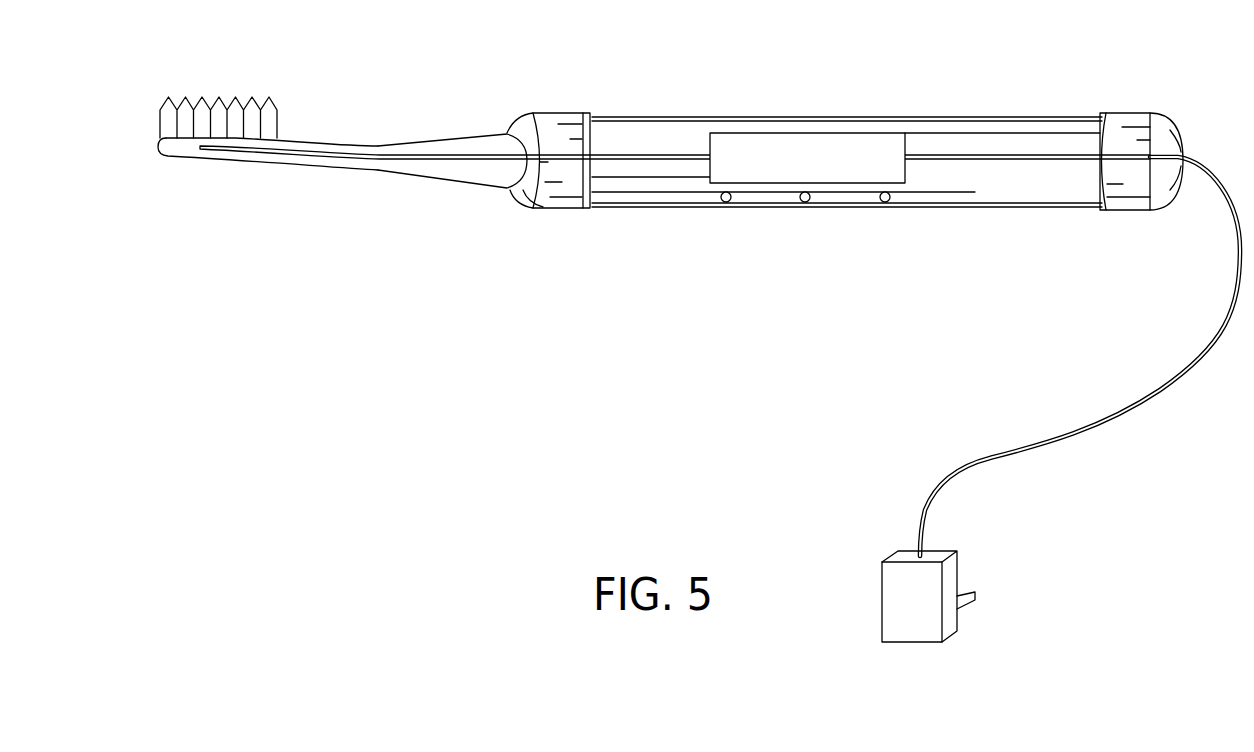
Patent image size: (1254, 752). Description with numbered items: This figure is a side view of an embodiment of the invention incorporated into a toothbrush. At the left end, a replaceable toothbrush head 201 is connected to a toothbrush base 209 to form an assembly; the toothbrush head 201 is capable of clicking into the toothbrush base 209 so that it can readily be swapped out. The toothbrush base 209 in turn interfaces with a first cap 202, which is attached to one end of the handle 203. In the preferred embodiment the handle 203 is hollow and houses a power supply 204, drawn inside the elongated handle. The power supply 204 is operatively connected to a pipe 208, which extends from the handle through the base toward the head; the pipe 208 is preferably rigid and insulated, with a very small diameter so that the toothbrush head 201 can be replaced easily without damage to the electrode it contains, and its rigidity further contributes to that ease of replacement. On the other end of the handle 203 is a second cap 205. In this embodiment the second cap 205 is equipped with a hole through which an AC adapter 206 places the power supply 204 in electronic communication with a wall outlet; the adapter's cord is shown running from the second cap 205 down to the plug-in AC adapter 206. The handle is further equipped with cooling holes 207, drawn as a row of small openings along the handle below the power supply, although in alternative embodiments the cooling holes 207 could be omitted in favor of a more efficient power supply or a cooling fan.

The toothbrush head 201 is at (195, 93).
The first cap 202 is at (525, 98).
The handle 203 is at (723, 88).
The power supply 204 is at (798, 130).
The second cap 205 is at (1172, 112).
The AC adapter 206 is at (970, 620).
The cooling holes 207 is at (805, 215).
The pipe 208 is at (484, 167).
The toothbrush base 209 is at (328, 183).